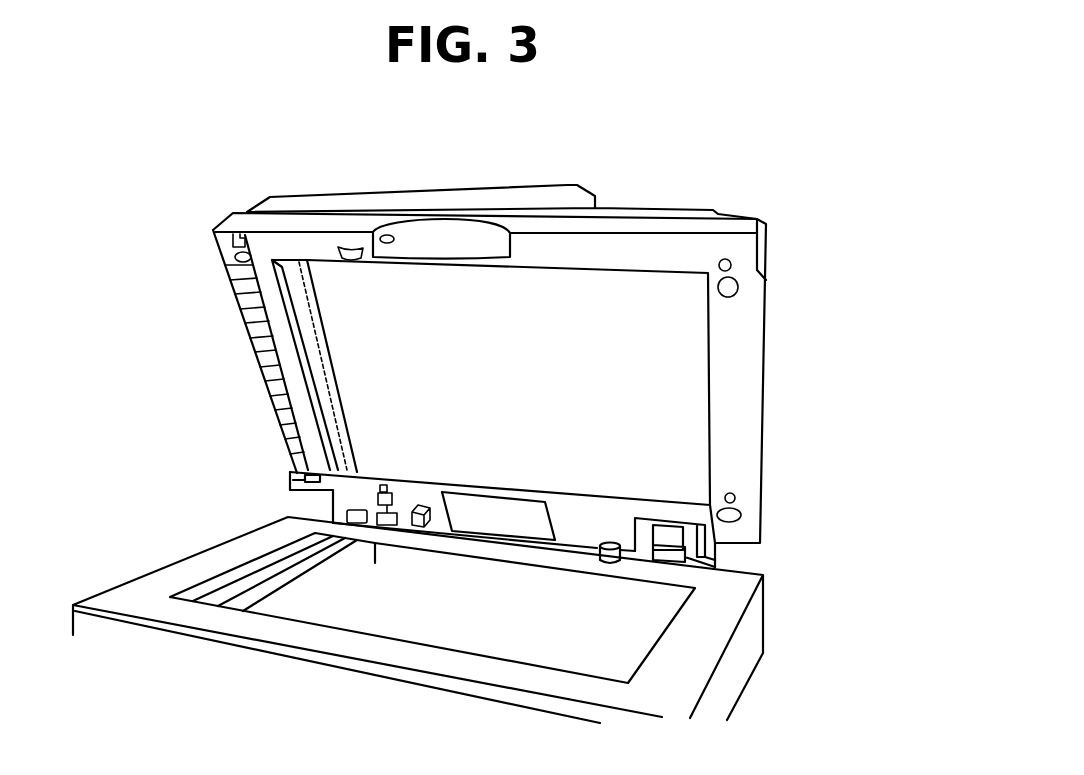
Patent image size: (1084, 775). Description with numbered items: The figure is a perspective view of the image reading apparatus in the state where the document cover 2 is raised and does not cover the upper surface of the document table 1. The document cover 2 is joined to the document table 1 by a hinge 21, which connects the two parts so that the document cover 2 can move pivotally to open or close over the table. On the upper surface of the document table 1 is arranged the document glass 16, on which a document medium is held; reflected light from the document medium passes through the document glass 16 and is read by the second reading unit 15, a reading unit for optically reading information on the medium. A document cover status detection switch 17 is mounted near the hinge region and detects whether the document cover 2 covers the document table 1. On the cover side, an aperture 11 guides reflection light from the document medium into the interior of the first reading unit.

The document table 1 is at (220, 552).
The document cover 2 is at (680, 227).
The aperture 11 is at (300, 313).
The second reading unit 15 is at (289, 596).
The document glass 16 is at (628, 623).
The document cover status detection switch 17 is at (608, 542).
The hinge 21 is at (330, 513).